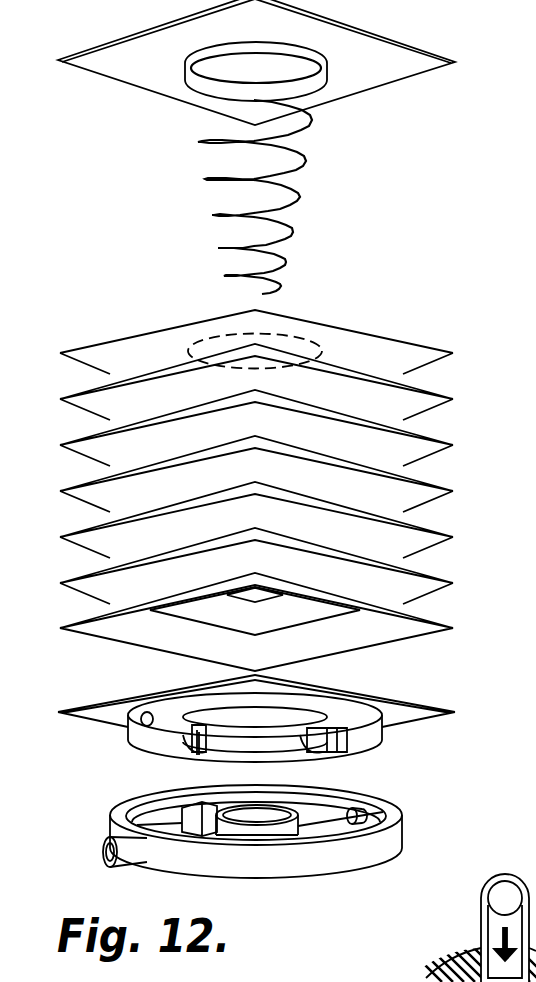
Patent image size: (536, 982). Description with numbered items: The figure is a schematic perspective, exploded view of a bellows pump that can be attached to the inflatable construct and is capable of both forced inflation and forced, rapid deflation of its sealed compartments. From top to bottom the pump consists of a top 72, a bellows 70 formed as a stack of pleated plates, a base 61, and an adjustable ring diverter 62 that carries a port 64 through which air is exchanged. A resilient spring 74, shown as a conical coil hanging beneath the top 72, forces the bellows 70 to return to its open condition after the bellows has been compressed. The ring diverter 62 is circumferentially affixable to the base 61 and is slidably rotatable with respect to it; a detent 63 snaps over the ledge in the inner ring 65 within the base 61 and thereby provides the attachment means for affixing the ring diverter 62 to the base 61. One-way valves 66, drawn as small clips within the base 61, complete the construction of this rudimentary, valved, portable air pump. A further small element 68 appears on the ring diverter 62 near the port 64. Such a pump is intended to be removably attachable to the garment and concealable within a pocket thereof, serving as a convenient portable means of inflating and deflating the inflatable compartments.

The base 61 is at (256, 733).
The adjustable ring diverter 62 is at (255, 858).
The detent 63 is at (120, 802).
The port 64 is at (103, 850).
The inner ring 65 is at (195, 750).
The one-way valves 66 is at (183, 735).
The peg 68 is at (388, 805).
The bellows 70 is at (418, 527).
The top 72 is at (398, 65).
The resilient spring 74 is at (247, 190).